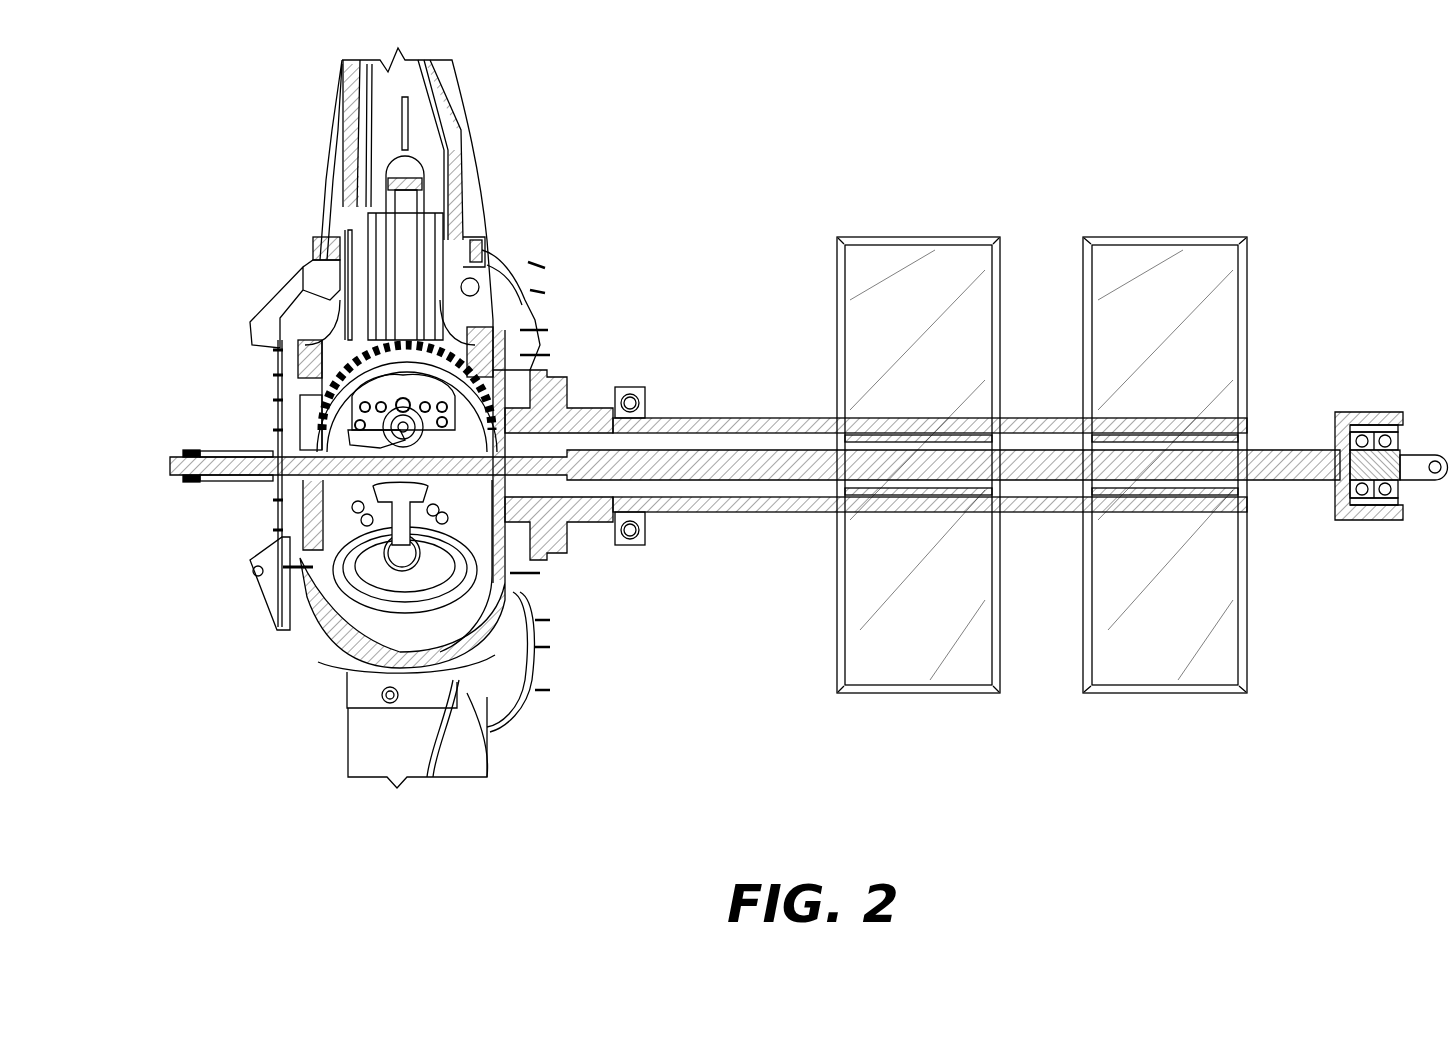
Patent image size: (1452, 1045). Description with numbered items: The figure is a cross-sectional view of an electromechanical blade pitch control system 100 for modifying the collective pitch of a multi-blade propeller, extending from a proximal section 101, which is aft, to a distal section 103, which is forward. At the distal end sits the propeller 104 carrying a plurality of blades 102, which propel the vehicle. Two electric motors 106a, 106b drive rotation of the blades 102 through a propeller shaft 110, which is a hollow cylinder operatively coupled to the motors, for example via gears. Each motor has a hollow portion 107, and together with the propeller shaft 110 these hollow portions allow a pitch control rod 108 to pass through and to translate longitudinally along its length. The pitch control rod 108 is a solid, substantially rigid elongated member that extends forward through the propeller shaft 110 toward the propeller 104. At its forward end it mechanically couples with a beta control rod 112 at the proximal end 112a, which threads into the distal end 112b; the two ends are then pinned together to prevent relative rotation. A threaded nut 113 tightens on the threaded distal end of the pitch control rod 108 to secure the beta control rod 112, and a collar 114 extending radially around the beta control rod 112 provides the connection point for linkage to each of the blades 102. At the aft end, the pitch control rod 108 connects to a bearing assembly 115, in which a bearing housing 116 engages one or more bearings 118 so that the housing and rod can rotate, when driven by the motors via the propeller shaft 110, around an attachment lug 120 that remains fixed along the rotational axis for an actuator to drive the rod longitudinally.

The electromechanical blade pitch control system 100 is at (762, 106).
The proximal section 101 is at (1353, 203).
The blade 102 is at (463, 98).
The distal section 103 is at (256, 246).
The propeller 104 is at (532, 236).
The electric motor 106a is at (914, 236).
The electric motor 106b is at (1166, 236).
The hollow portion 107 is at (915, 500).
The pitch control rod 108 is at (172, 466).
The propeller shaft 110 is at (740, 416).
The beta control rod 112 is at (205, 428).
The proximal end 112a is at (577, 547).
The distal end 112b is at (247, 483).
The threaded nut 113 is at (190, 483).
The collar 114 is at (357, 440).
The bearing assembly 115 is at (1378, 418).
The bearing housing 116 is at (1370, 410).
The bearing 118 is at (1352, 522).
The attachment lug 120 is at (1432, 482).